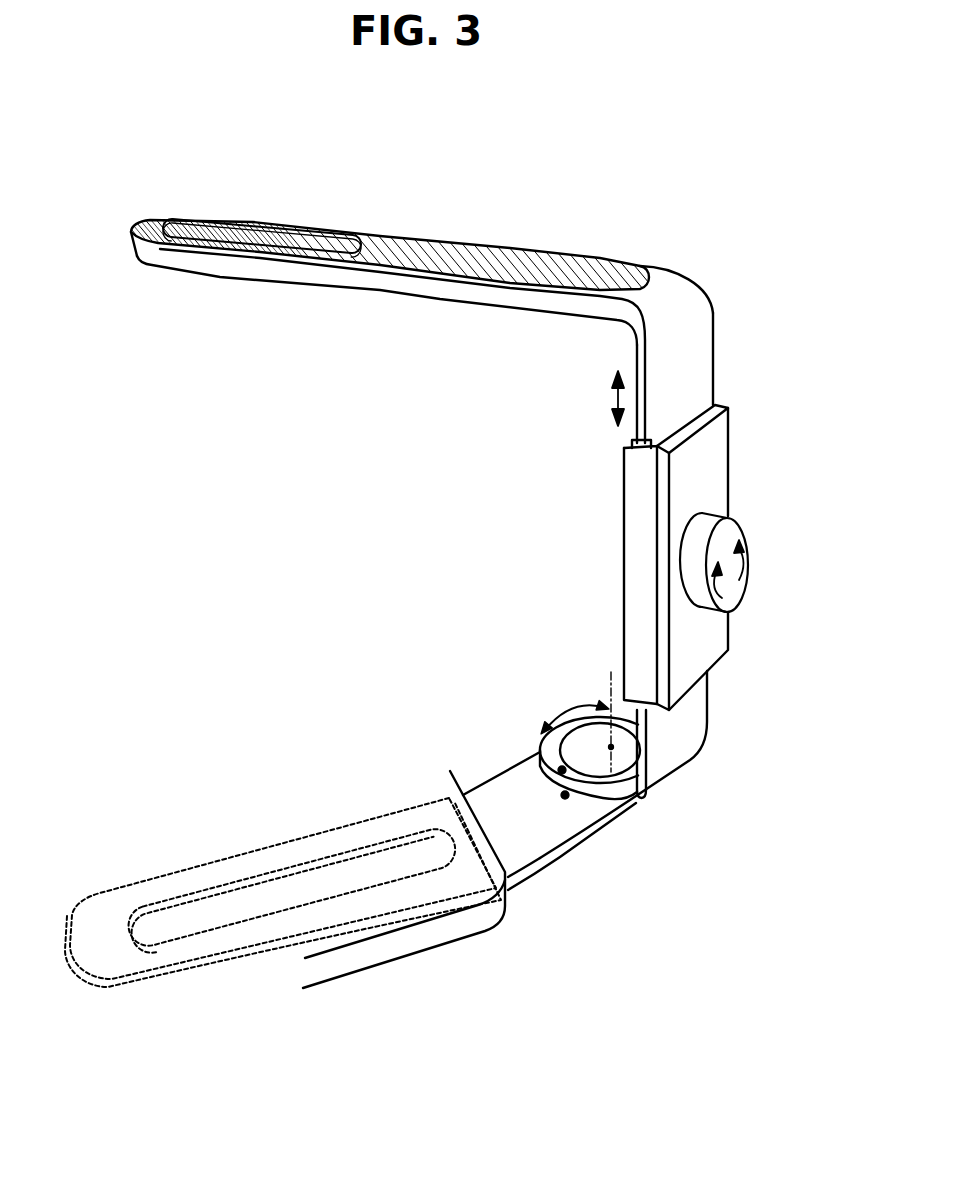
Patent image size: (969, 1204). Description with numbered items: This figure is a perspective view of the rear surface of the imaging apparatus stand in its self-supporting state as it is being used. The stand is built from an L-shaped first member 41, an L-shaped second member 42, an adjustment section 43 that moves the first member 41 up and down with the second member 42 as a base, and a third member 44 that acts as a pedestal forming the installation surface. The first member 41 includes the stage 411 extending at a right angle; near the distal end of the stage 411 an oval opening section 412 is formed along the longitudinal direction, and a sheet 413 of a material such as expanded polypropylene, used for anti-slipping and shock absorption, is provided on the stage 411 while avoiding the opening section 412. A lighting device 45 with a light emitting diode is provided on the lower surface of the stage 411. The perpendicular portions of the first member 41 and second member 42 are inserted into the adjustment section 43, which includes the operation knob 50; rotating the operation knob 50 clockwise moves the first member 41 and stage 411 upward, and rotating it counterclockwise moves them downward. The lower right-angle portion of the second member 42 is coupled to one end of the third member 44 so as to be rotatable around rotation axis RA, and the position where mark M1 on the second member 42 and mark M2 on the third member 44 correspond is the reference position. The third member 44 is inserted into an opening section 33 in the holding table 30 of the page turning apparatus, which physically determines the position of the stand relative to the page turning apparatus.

The holding table 30 is at (436, 955).
The opening section 33 is at (441, 785).
The first member 41 is at (714, 311).
The stage 411 is at (643, 270).
The opening section 412 is at (287, 242).
The sheet 413 is at (548, 263).
The second member 42 is at (685, 727).
The adjustment section 43 is at (724, 458).
The third member 44 is at (533, 873).
The lighting device 45 is at (237, 280).
The operation knob 50 is at (739, 519).
The rotation axis RA is at (603, 703).
The mark M1 is at (560, 768).
The mark M2 is at (566, 797).